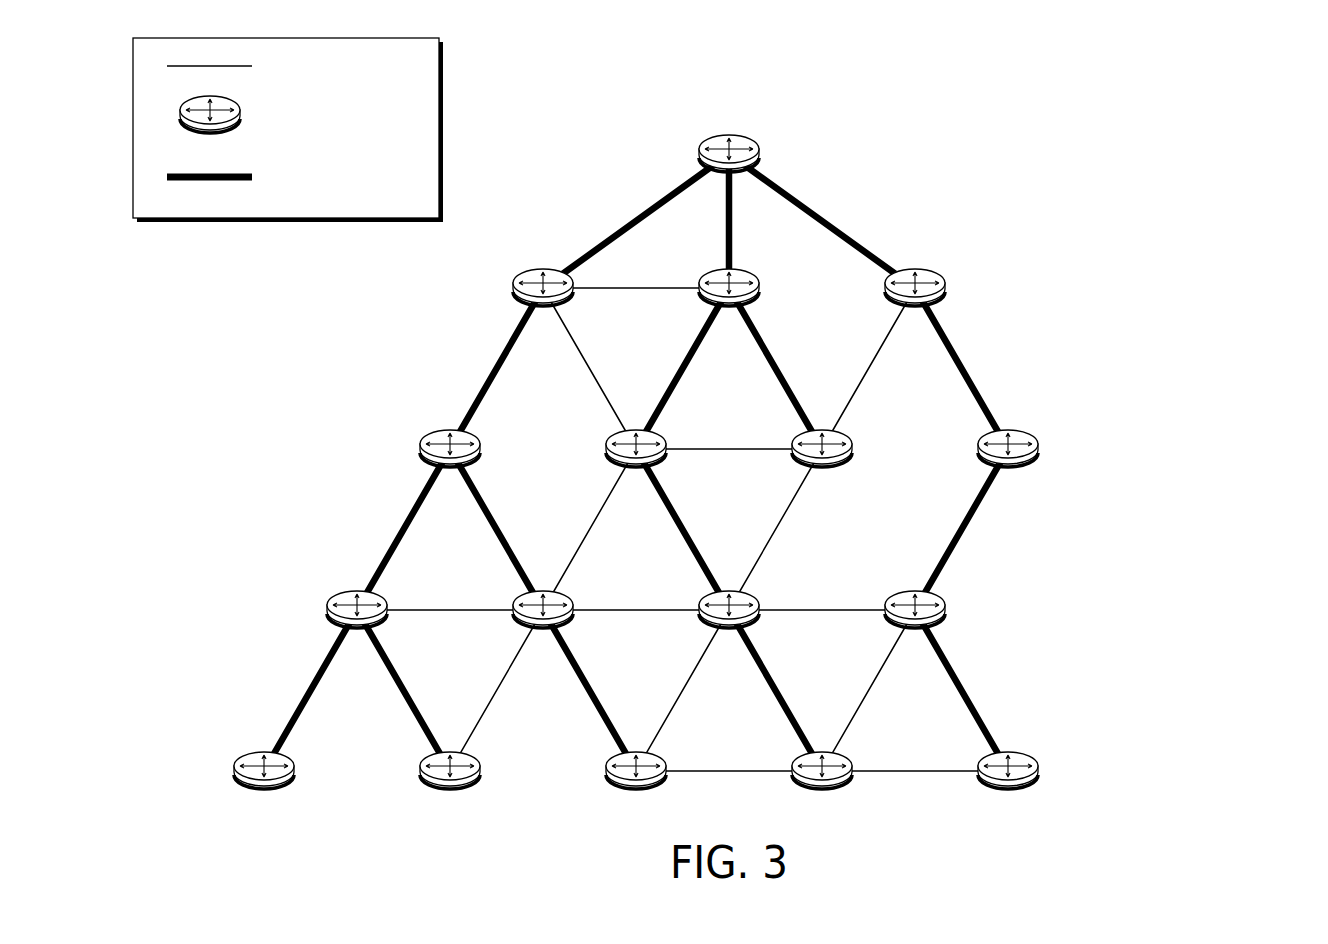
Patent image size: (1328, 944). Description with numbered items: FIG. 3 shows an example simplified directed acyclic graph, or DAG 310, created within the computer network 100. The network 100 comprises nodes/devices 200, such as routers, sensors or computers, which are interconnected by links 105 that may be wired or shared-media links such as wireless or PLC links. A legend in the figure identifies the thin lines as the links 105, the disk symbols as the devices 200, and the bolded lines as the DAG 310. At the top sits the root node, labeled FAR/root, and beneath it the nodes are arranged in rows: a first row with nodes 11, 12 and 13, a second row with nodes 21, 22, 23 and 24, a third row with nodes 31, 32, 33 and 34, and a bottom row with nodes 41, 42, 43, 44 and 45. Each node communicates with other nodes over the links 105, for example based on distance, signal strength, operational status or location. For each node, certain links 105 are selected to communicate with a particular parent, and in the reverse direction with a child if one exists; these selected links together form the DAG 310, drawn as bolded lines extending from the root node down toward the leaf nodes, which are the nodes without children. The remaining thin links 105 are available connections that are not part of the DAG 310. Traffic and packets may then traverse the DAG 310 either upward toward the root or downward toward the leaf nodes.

The computer network 100 is at (1219, 97).
The links 105 is at (278, 66).
The nodes/devices 200 is at (293, 114).
The directed acyclic graph (DAG) 310 is at (270, 177).
The node 11 is at (543, 307).
The node 12 is at (729, 307).
The node 13 is at (915, 307).
The node 21 is at (450, 468).
The node 22 is at (636, 468).
The node 23 is at (822, 468).
The node 24 is at (1008, 468).
The node 31 is at (357, 629).
The node 32 is at (543, 629).
The node 33 is at (729, 629).
The node 34 is at (915, 629).
The node 41 is at (264, 790).
The node 42 is at (450, 790).
The node 43 is at (636, 790).
The node 44 is at (822, 790).
The node 45 is at (1008, 790).